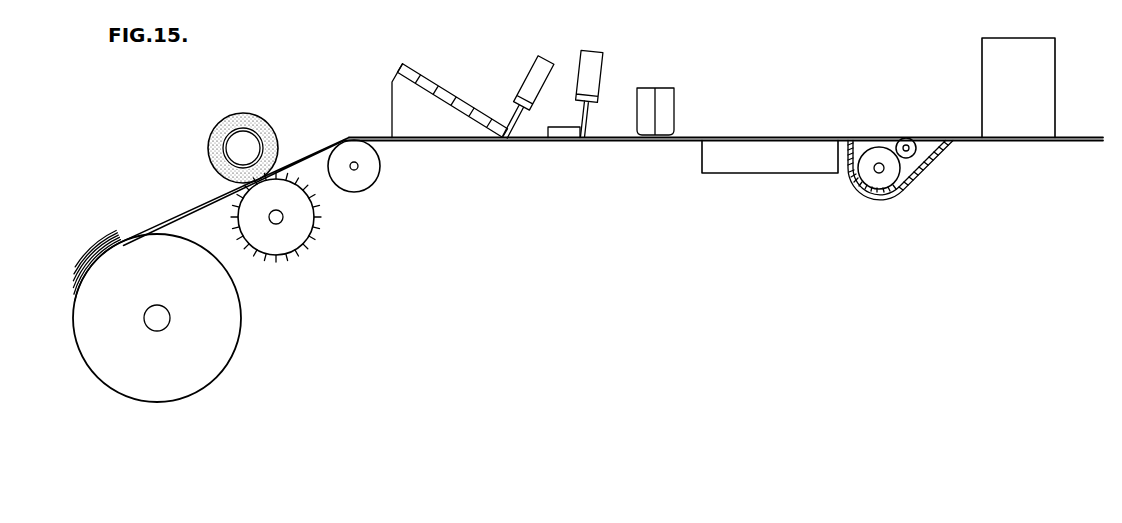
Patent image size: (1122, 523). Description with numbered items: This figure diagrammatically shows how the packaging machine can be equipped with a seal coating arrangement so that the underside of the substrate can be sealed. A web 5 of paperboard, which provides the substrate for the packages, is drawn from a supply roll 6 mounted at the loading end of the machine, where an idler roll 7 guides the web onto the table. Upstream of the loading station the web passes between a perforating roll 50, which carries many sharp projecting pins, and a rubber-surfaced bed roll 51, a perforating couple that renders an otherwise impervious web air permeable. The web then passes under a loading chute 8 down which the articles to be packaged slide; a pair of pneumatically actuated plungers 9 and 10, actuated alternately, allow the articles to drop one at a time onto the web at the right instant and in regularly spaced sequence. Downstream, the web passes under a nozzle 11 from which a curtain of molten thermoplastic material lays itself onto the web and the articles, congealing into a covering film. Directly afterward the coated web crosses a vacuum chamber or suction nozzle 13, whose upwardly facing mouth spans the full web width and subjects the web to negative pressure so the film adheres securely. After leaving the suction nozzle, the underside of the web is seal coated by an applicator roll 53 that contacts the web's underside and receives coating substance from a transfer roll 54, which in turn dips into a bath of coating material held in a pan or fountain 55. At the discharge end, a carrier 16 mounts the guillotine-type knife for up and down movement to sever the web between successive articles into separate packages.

The web 5 is at (197, 208).
The supply roll 6 is at (107, 263).
The idler roll 7 is at (367, 173).
The loading chute 8 is at (407, 100).
The pneumatically actuated plunger 9 is at (528, 83).
The pneumatically actuated plunger 10 is at (583, 65).
The nozzle 11 is at (648, 97).
The vacuum chamber or suction nozzle 13 is at (767, 163).
The carrier 16 is at (997, 62).
The perforating roll 50 is at (303, 232).
The bed roll 51 is at (230, 122).
The applicator roll 53 is at (907, 147).
The transfer roll 54 is at (878, 157).
The pan or fountain 55 is at (923, 175).